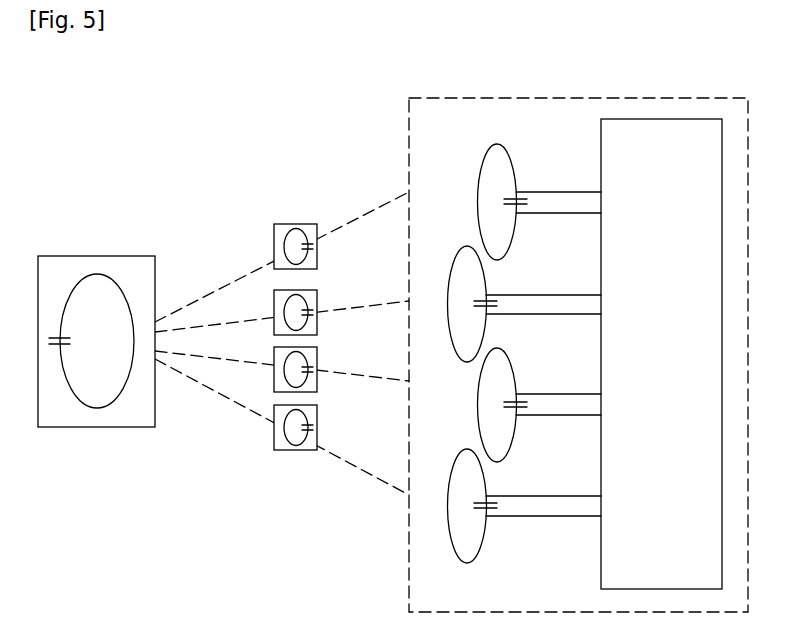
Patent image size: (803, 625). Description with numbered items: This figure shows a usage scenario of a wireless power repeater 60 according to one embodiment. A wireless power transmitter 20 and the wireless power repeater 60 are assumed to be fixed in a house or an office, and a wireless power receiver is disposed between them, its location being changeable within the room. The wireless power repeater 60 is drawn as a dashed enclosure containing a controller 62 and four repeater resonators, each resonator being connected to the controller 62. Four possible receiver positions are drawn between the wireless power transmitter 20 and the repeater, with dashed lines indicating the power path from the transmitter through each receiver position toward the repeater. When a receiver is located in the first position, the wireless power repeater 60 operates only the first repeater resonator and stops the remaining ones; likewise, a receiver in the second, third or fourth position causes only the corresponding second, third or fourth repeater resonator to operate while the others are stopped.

The wireless power transmitter 20 is at (96, 256).
The wireless power repeater 60 is at (535, 98).
The controller 62 is at (636, 119).